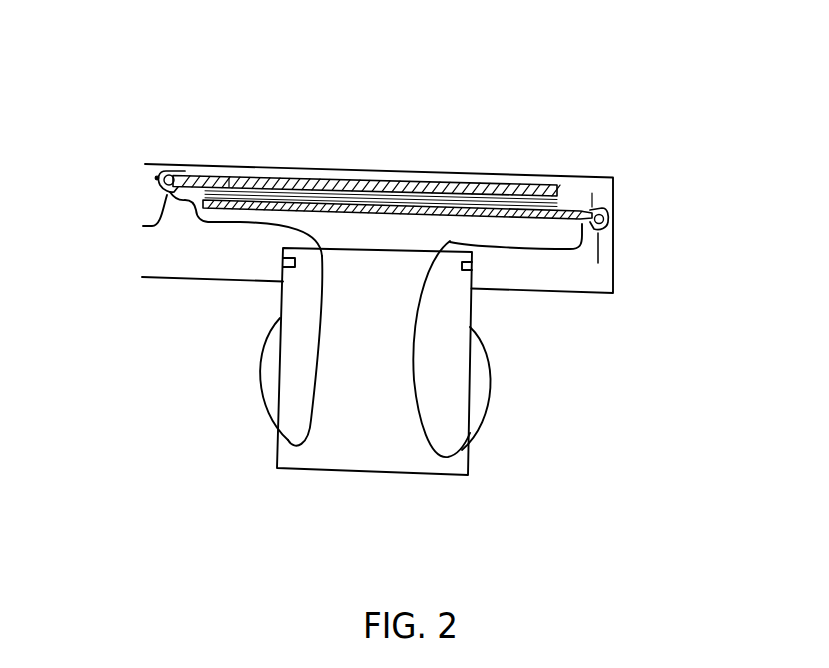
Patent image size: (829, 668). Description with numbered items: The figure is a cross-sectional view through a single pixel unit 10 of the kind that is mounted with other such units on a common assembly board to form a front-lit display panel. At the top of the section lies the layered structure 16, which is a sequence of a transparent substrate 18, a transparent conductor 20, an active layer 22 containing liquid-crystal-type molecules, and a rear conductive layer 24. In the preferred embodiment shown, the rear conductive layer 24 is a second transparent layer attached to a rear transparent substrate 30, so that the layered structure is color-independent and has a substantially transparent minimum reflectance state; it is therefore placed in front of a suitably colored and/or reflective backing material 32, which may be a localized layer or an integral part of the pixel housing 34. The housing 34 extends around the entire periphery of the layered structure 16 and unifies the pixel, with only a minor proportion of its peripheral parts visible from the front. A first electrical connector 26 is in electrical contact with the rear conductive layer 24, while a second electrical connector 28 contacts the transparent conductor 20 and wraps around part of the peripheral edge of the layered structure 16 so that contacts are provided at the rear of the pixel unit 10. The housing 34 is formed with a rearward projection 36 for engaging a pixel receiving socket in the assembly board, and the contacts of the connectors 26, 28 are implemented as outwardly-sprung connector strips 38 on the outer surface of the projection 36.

The pixel unit 10 is at (597, 108).
The layered structure 16 is at (156, 178).
The transparent substrate 18 is at (446, 176).
The transparent conductor 20 is at (229, 178).
The active layer 22 is at (345, 188).
The rear conductive layer 24 is at (591, 206).
The first electrical connector 26 is at (598, 263).
The second electrical connector 28 is at (143, 226).
The rear transparent substrate 30 is at (606, 228).
The backing material 32 is at (420, 227).
The pixel housing 34 is at (592, 193).
The rearward projection 36 is at (377, 420).
The connector strips 38 is at (258, 362).